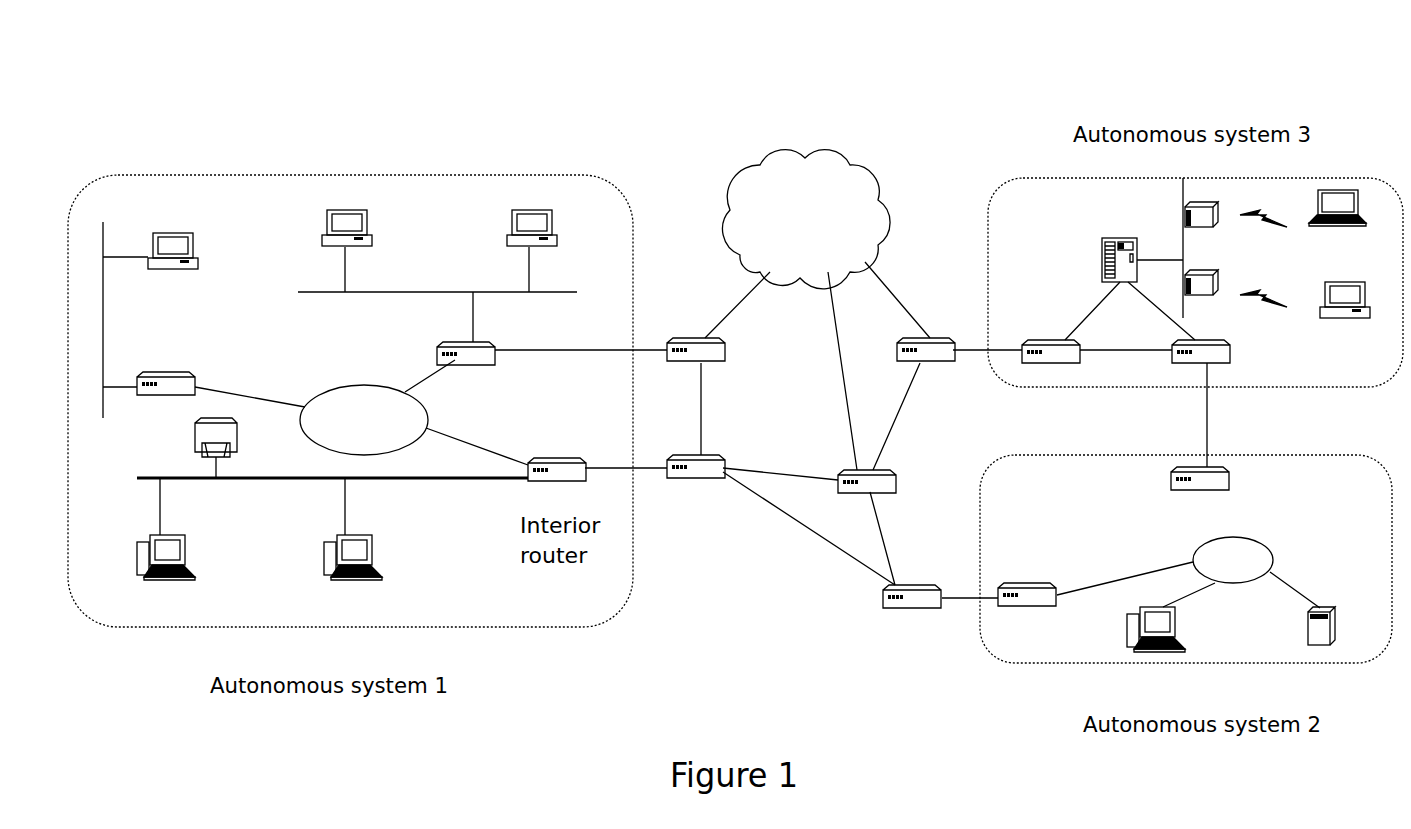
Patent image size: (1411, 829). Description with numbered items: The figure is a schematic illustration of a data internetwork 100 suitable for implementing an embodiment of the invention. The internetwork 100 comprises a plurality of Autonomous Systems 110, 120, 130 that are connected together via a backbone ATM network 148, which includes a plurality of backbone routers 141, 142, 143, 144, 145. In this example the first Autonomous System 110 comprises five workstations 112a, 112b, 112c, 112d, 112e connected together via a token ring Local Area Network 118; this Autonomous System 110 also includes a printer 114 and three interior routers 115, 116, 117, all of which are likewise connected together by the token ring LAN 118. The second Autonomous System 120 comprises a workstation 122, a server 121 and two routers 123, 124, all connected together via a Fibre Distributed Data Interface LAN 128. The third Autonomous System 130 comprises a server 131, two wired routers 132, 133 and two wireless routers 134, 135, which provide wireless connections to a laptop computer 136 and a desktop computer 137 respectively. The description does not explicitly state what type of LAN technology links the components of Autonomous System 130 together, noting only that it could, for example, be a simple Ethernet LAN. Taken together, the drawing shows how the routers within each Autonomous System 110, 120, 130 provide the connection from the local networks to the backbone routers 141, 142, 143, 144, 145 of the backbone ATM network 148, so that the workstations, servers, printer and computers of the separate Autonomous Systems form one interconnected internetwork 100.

The internetwork 100 is at (703, 104).
The Autonomous System 110 is at (461, 177).
The workstation 112a is at (368, 558).
The workstation 112b is at (183, 555).
The workstation 112c is at (533, 208).
The workstation 112d is at (347, 209).
The workstation 112e is at (174, 233).
The printer 114 is at (228, 432).
The interior router 115 is at (172, 372).
The interior router 116 is at (485, 338).
The interior router 117 is at (565, 453).
The token ring Local Area Network 118 is at (345, 390).
The Autonomous System 120 is at (1355, 455).
The server 121 is at (1335, 607).
The workstation 122 is at (1170, 630).
The router 123 is at (1030, 583).
The router 124 is at (1228, 478).
The Fibre Distributed Data Interface LAN 128 is at (1258, 546).
The Autonomous System 130 is at (1347, 178).
The server 131 is at (1112, 238).
The wired router 132 is at (1040, 340).
The wired router 133 is at (1229, 350).
The wireless router 134 is at (1198, 272).
The wireless router 135 is at (1218, 203).
The laptop computer 136 is at (1355, 221).
The desktop computer 137 is at (1357, 320).
The backbone router 141 is at (725, 350).
The backbone router 142 is at (715, 453).
The backbone router 143 is at (940, 340).
The backbone router 144 is at (896, 480).
The backbone router 145 is at (930, 585).
The backbone ATM network 148 is at (840, 153).